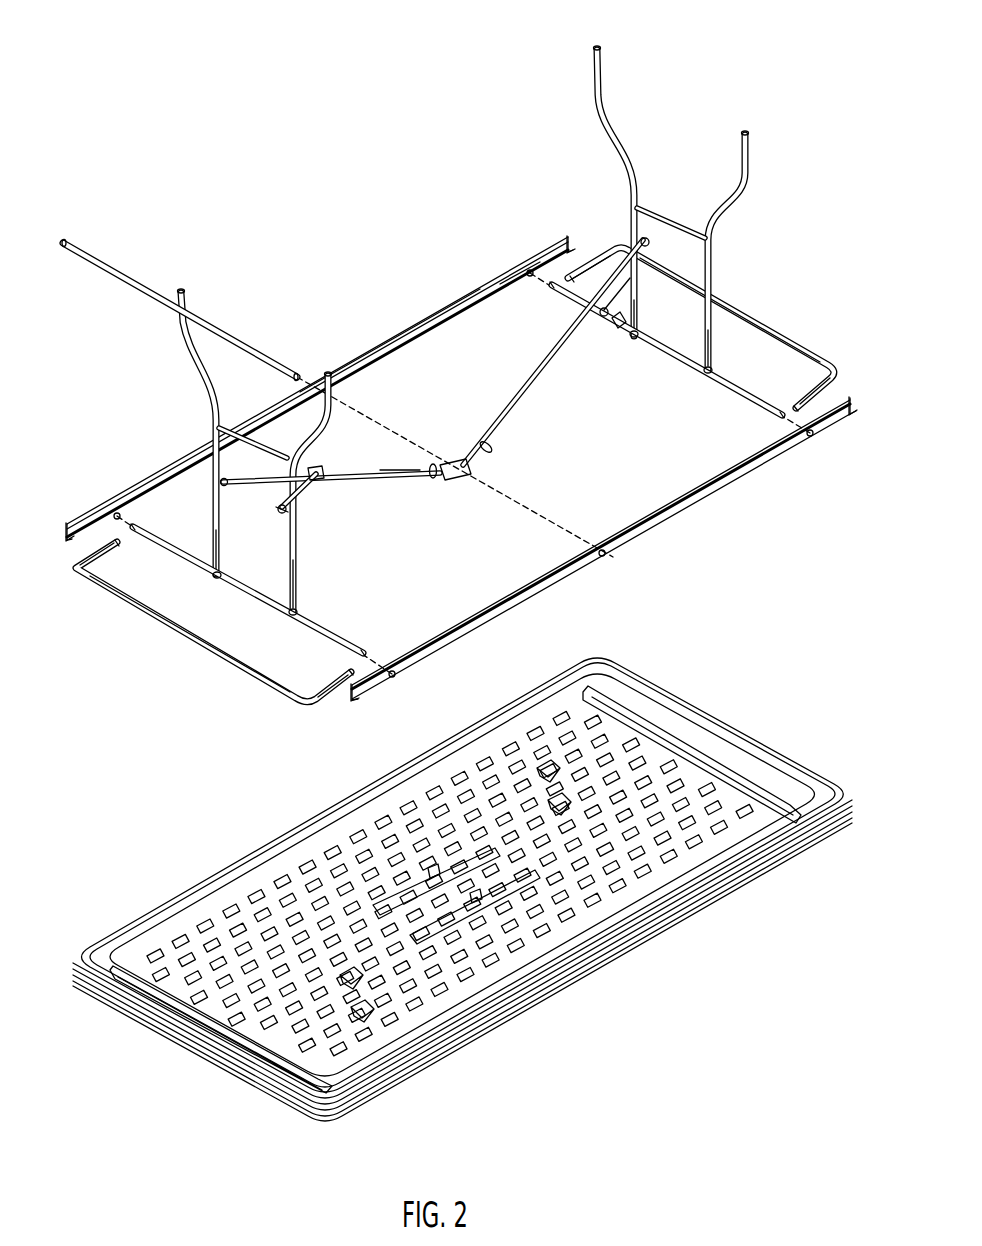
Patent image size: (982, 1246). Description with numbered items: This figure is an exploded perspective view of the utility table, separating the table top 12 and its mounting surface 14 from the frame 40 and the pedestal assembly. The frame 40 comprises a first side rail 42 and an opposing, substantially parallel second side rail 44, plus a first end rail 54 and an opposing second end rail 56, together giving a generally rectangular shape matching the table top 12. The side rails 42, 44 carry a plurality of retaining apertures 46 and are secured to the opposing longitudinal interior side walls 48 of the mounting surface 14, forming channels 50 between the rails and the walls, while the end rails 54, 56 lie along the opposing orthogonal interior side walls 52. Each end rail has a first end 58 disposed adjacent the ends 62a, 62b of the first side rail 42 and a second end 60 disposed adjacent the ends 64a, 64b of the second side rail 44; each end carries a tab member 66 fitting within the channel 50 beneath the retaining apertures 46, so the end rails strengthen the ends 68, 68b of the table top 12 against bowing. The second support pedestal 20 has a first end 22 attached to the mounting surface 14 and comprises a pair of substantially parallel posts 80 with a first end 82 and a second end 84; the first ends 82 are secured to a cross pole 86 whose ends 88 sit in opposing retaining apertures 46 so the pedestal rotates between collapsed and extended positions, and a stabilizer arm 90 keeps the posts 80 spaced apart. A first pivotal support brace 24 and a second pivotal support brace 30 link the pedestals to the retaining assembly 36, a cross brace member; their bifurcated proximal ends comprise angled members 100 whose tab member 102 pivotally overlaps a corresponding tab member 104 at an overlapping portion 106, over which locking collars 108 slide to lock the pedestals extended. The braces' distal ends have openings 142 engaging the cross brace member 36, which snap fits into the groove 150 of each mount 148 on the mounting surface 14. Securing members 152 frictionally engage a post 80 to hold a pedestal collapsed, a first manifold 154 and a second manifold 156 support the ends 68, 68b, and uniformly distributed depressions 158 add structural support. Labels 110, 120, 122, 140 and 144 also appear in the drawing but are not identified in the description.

The table top 12 is at (195, 1073).
The mounting surface 14 is at (620, 878).
The second support pedestal 20 is at (714, 282).
The first end of support pedestal 22 is at (200, 569).
The first pivotal support brace 24 is at (401, 482).
The second pivotal support brace 30 is at (527, 388).
The retaining assembly 36 is at (201, 287).
The frame 40 is at (440, 297).
The first side rail 42 is at (408, 338).
The second side rail 44 is at (666, 517).
The retaining apertures 46 is at (120, 522).
The longitudinal interior side walls 48 is at (210, 897).
The channels 50 is at (58, 542).
The orthogonal interior side walls 52 is at (455, 908).
The first end rail 54 is at (160, 617).
The second end rail 56 is at (767, 330).
The first end of end rail 58 is at (72, 575).
The second end of end rail 60 is at (288, 700).
The end of first side rail 62a is at (65, 522).
The end of first side rail 62b is at (556, 244).
The end of second side rail 64a is at (357, 700).
The end of second side rail 64b is at (842, 395).
The tab member 66 is at (100, 555).
The end of the table top 68 is at (209, 1051).
The end of the table top 68b is at (692, 736).
The posts 80 is at (485, 331).
The first end of posts 82 is at (219, 590).
The second end of posts 84 is at (601, 82).
The cross pole 86 is at (340, 633).
The ends of cross pole 88 is at (137, 526).
The stabilizer arm 90 is at (241, 432).
The angled members 100 is at (279, 506).
The tab member 102 is at (312, 468).
The tab member 104 is at (317, 490).
The overlapping portion 106 is at (300, 500).
The locking collars 108 is at (433, 480).
The rail portion 110 is at (522, 268).
The support bar end 120 is at (92, 253).
The brace portion 122 is at (500, 418).
The support bar portion 140 is at (291, 364).
The openings 142 is at (466, 478).
The lip 144 is at (782, 851).
The mount 148 is at (420, 887).
The groove 150 is at (433, 873).
The securing member 152 is at (568, 795).
The first manifold 154 is at (263, 1040).
The second manifold 156 is at (670, 720).
The depressions 158 is at (682, 878).